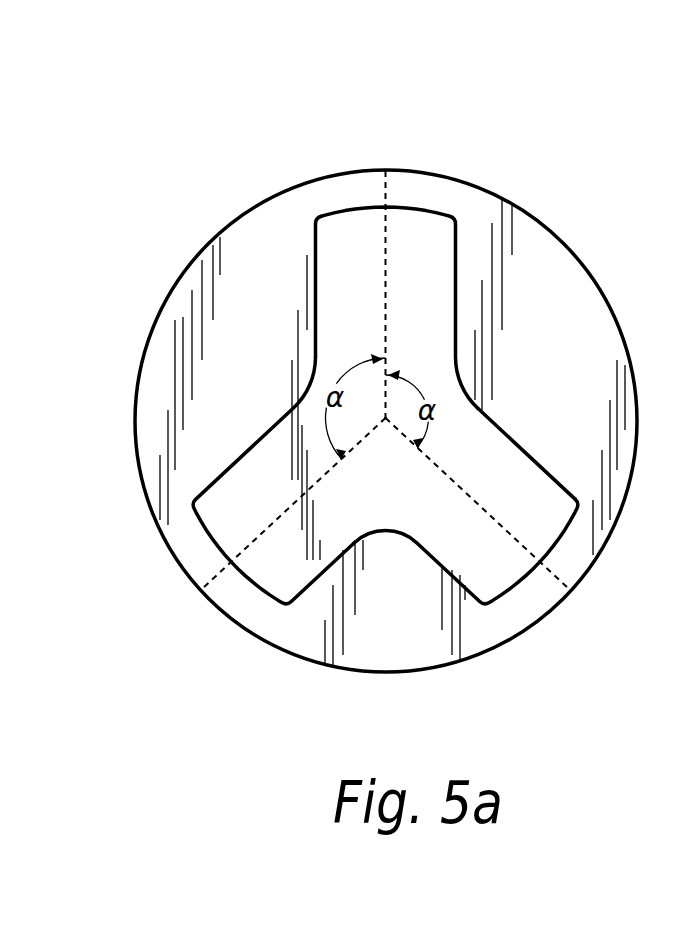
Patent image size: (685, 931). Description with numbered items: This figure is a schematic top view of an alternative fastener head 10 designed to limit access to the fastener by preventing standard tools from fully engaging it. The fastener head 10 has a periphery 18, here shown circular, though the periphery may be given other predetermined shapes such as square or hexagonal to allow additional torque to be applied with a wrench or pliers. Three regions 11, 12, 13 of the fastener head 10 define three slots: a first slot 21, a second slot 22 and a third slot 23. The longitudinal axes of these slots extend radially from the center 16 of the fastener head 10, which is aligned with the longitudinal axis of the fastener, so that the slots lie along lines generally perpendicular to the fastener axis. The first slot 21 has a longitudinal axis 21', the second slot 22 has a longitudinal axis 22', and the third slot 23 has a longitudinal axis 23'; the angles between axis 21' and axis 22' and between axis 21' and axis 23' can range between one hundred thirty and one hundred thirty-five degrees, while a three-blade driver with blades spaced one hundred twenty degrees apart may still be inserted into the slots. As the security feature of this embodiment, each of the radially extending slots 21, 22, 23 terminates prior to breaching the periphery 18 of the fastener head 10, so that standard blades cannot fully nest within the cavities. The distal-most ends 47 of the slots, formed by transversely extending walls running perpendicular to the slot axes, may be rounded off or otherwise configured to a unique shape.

The fastener head 10 is at (268, 687).
The region 11 is at (565, 305).
The region 12 is at (385, 635).
The region 13 is at (198, 320).
The center 16 is at (389, 430).
The periphery 18 is at (557, 235).
The first slot 21 is at (412, 260).
The longitudinal axis of first slot 21' is at (417, 255).
The second slot 22 is at (250, 519).
The longitudinal axis of second slot 22' is at (249, 505).
The third slot 23 is at (482, 600).
The longitudinal axis of third slot 23' is at (530, 506).
The distal-most end of slot 47 is at (579, 499).